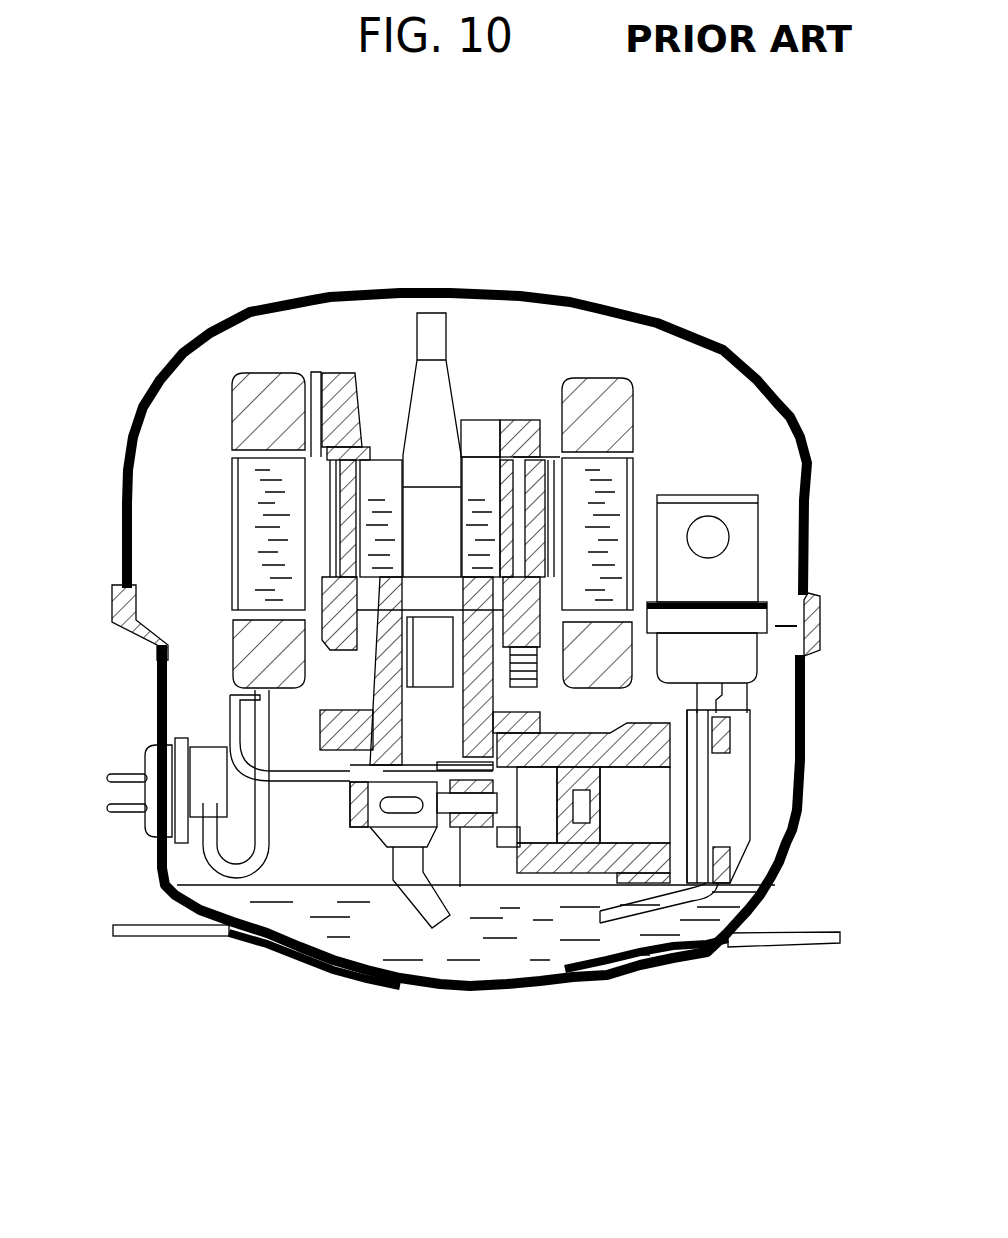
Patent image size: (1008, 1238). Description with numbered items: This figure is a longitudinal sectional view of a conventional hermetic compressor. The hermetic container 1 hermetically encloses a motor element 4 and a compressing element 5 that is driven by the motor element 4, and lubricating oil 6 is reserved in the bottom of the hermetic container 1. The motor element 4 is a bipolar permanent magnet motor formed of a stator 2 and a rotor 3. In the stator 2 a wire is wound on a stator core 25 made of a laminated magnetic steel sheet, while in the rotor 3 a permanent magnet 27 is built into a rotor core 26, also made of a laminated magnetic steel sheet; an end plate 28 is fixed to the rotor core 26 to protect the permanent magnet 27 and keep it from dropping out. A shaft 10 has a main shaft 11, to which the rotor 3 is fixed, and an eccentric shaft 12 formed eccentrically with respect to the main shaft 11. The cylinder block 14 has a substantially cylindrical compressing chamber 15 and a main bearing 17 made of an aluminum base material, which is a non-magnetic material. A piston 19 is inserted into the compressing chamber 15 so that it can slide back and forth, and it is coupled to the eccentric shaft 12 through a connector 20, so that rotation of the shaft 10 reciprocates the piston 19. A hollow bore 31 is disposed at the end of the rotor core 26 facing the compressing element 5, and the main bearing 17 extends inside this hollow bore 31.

The hermetic container 1 is at (360, 291).
The stator 2 is at (232, 477).
The rotor 3 is at (316, 372).
The motor element 4 is at (230, 425).
The compressing element 5 is at (753, 772).
The lubricating oil 6 is at (310, 905).
The shaft 10 is at (425, 415).
The main shaft 11 is at (425, 703).
The eccentric shaft 12 is at (392, 830).
The cylinder block 14 is at (587, 883).
The compressing chamber 15 is at (657, 802).
The main bearing 17 is at (495, 657).
The piston 19 is at (710, 955).
The connector 20 is at (455, 830).
The stator core 25 is at (265, 555).
The rotor core 26 is at (600, 380).
The permanent magnet 27 is at (540, 477).
The end plate 28 is at (512, 425).
The hollow bore 31 is at (490, 578).